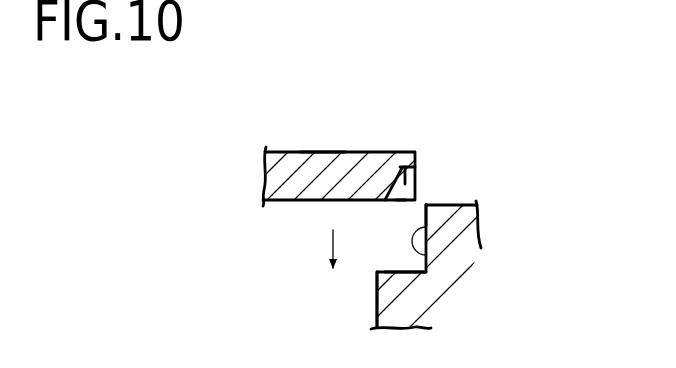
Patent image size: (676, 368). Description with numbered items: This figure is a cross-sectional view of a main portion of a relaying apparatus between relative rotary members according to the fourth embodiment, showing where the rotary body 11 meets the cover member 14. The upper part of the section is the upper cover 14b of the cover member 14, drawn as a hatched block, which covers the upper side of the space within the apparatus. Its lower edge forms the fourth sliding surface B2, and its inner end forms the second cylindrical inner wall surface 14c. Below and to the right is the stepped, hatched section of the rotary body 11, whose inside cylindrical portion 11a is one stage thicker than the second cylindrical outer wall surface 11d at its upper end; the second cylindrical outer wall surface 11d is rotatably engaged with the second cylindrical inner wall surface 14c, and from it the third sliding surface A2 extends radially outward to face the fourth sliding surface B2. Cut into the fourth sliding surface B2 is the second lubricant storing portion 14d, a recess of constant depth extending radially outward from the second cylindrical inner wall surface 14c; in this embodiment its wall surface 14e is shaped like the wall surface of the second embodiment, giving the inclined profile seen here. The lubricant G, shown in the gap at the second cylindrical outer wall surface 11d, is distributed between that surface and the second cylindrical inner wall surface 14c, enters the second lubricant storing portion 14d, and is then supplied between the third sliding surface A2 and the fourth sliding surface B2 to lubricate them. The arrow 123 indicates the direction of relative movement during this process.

The cover member 14 is at (280, 150).
The upper cover 14b is at (322, 152).
The second cylindrical inner wall surface 14c is at (419, 172).
The second lubricant storing portion 14d is at (396, 190).
The wall surface 14e is at (403, 152).
The rotary body 11 is at (463, 202).
The inside cylindrical portion 11a is at (377, 309).
The second cylindrical outer wall surface 11d is at (421, 206).
The flow direction 123 is at (333, 242).
The third sliding surface A2 is at (394, 262).
The fourth sliding surface B2 is at (400, 203).
The lubricant G is at (430, 241).